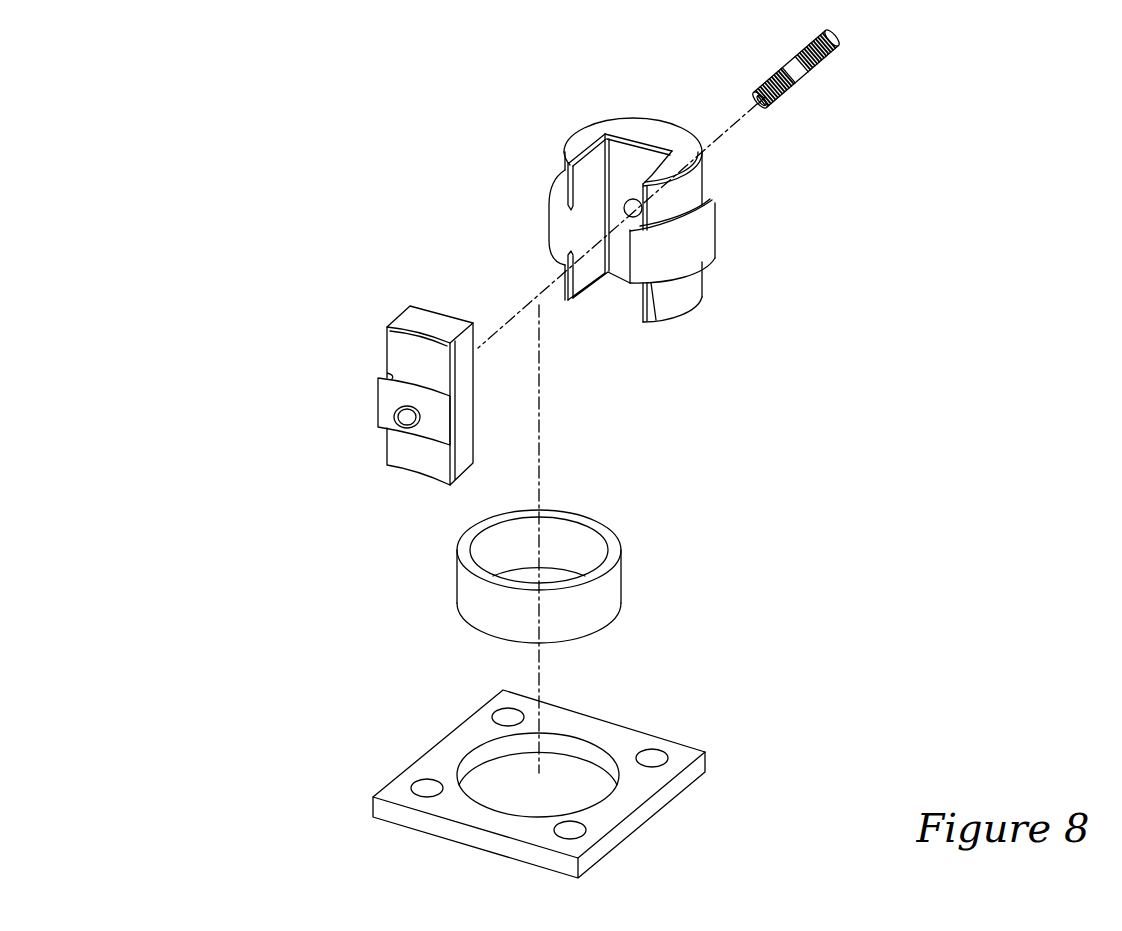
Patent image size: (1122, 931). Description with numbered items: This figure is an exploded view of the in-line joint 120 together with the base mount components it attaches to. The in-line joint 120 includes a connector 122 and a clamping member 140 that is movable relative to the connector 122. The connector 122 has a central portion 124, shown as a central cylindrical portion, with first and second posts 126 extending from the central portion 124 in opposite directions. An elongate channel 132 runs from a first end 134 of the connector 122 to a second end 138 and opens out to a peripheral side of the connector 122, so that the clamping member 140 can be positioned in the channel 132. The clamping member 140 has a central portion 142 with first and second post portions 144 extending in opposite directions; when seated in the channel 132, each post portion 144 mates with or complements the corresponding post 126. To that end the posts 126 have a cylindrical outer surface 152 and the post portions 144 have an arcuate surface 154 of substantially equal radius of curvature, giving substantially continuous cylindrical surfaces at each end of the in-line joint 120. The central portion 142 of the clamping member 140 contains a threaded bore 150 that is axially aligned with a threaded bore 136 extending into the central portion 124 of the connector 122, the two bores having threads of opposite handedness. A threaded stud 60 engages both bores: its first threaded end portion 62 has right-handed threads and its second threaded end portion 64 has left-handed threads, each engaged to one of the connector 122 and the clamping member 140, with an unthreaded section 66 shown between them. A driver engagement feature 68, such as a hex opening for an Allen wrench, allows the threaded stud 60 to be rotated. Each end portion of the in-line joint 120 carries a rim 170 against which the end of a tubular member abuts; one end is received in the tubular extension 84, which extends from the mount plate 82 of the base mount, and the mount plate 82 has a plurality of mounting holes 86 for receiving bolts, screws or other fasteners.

The threaded stud 60 is at (830, 108).
The first threaded end portion 62 is at (772, 92).
The second threaded end portion 64 is at (825, 63).
The unthreaded shank portion 66 is at (793, 70).
The driver engagement feature 68 is at (763, 110).
The mount plate 82 is at (666, 803).
The tubular extension 84 is at (612, 592).
The mounting holes 86 is at (498, 712).
The in-line joint 120 is at (352, 196).
The connector 122 is at (818, 222).
The central portion 124 is at (703, 244).
The first and second posts 126 is at (688, 186).
The elongate channel 132 is at (584, 223).
The first end 134 is at (634, 124).
The threaded bore 136 is at (602, 130).
The second end 138 is at (681, 314).
The clamping member 140 is at (329, 381).
The central portion 142 is at (386, 398).
The first and second post portions 144 is at (410, 318).
The threaded bore 150 is at (406, 416).
The cylindrical outer surface 152 is at (688, 209).
The arcuate surface 154 is at (403, 354).
The rim 170 is at (560, 190).